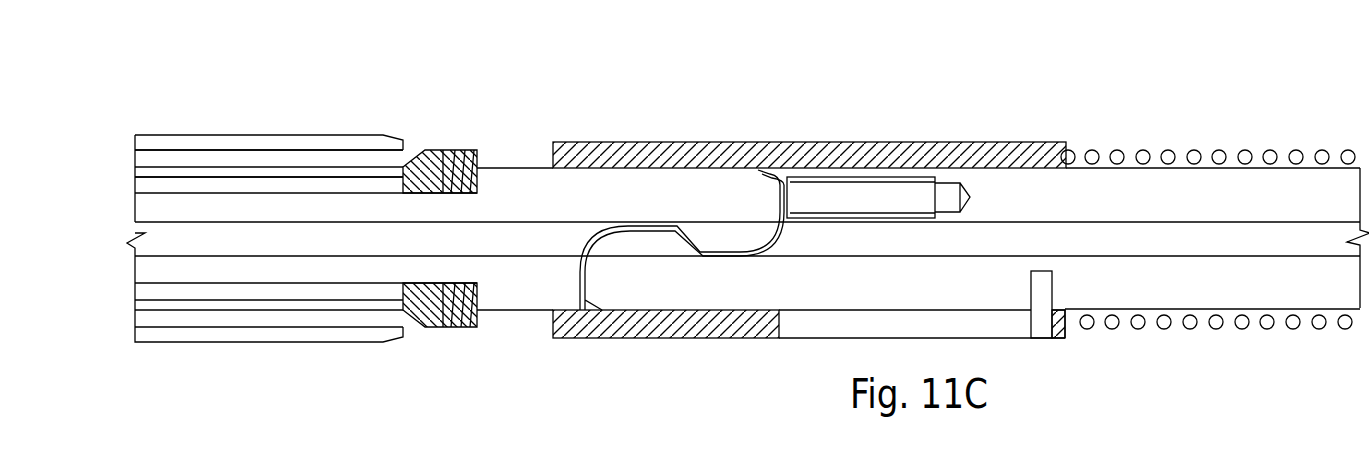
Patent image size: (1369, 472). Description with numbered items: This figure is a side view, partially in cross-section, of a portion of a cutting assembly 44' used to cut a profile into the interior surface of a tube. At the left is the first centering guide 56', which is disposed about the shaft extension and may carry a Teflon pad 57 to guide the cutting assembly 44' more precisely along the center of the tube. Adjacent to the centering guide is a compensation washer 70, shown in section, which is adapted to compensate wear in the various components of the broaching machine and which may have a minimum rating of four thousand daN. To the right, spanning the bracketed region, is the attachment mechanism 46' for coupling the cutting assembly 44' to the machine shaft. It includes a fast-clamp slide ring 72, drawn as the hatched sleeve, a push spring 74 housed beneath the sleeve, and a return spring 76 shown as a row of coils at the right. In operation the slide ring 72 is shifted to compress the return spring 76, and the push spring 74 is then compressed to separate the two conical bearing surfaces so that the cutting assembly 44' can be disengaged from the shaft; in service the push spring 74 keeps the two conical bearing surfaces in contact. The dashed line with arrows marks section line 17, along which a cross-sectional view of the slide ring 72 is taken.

The cutting assembly 44' is at (749, 77).
The attachment mechanism 46' is at (927, 31).
The first centering guide 56' is at (748, 206).
The Teflon pad 57 is at (313, 158).
The compensation washer 70 is at (458, 160).
The fast-clamp slide ring 72 is at (660, 152).
The push spring 74 is at (892, 192).
The return spring 76 is at (1297, 150).
The section line 17- 17 is at (683, 380).